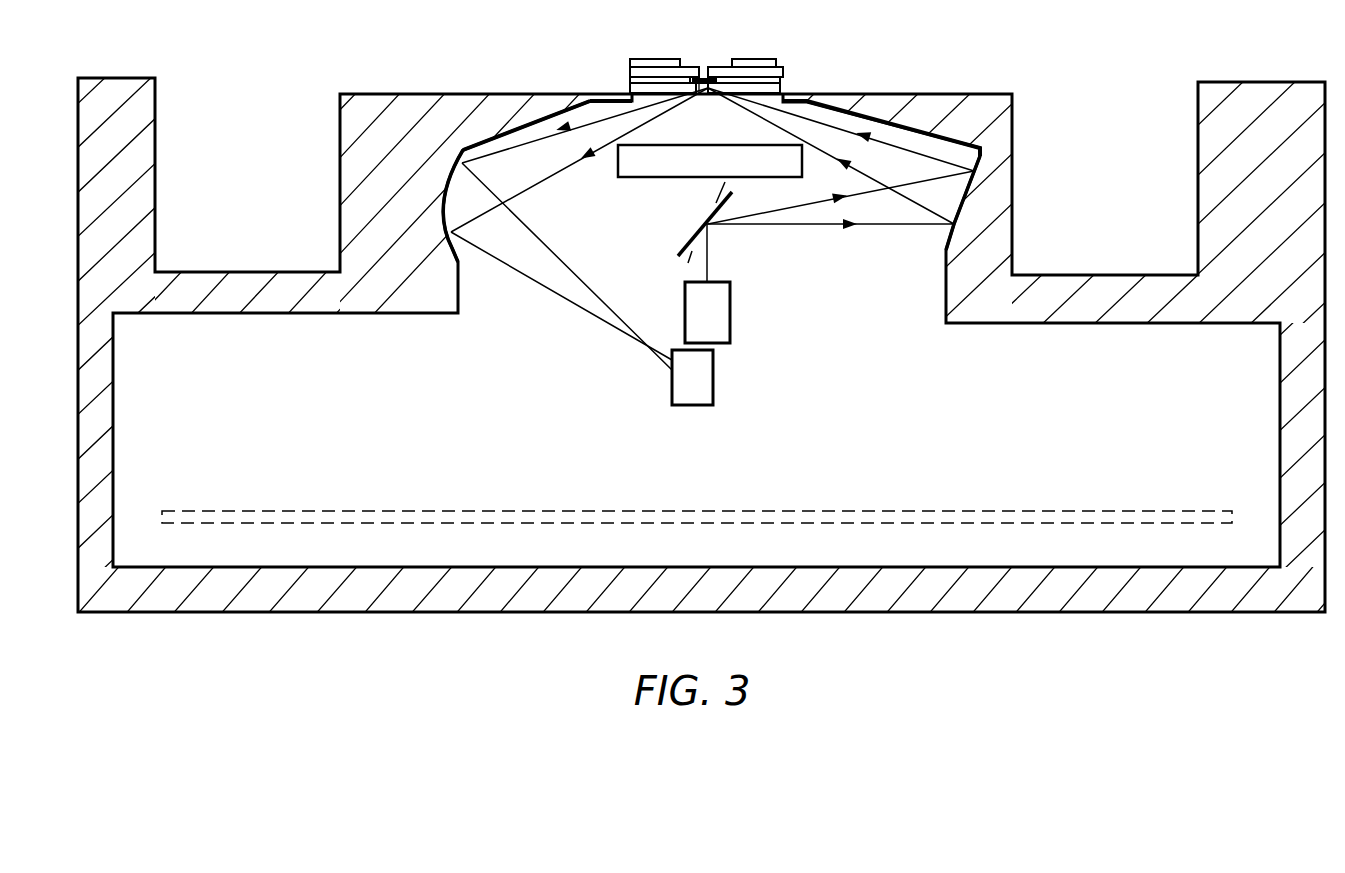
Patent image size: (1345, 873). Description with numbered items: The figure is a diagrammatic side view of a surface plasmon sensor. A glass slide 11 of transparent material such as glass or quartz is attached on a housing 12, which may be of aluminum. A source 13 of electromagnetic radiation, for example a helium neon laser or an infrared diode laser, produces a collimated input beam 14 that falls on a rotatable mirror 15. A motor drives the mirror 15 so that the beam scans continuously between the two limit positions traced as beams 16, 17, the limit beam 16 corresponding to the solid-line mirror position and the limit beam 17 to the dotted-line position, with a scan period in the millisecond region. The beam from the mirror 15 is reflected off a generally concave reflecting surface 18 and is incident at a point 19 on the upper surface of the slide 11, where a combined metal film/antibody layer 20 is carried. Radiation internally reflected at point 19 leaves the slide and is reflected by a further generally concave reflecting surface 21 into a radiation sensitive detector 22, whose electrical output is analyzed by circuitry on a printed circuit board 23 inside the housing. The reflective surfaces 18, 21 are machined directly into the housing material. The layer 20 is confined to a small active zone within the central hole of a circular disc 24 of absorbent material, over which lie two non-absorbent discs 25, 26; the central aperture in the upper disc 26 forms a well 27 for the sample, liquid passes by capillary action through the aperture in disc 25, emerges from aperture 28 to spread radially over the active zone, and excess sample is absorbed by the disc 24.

The glass slide 11 is at (767, 90).
The housing 12 is at (100, 131).
The source 13 is at (710, 320).
The collimated input beam 14 is at (707, 262).
The rotatable mirror 15 is at (690, 241).
The limit beam 16 is at (540, 180).
The limit beam 17 is at (508, 148).
The concave reflecting surface 18 is at (964, 195).
The point 19 is at (703, 90).
The metal film/antibody layer 20 is at (692, 64).
The concave reflecting surface 21 is at (445, 213).
The radiation sensitive detector 22 is at (700, 387).
The printed circuit board 23 is at (353, 518).
The circular disc 24 is at (647, 77).
The disc 25 is at (793, 68).
The upper disc 26 is at (757, 60).
The well 27 is at (727, 65).
The aperture 28 is at (705, 58).